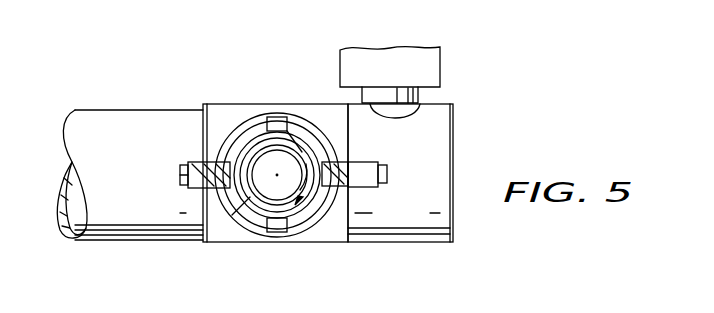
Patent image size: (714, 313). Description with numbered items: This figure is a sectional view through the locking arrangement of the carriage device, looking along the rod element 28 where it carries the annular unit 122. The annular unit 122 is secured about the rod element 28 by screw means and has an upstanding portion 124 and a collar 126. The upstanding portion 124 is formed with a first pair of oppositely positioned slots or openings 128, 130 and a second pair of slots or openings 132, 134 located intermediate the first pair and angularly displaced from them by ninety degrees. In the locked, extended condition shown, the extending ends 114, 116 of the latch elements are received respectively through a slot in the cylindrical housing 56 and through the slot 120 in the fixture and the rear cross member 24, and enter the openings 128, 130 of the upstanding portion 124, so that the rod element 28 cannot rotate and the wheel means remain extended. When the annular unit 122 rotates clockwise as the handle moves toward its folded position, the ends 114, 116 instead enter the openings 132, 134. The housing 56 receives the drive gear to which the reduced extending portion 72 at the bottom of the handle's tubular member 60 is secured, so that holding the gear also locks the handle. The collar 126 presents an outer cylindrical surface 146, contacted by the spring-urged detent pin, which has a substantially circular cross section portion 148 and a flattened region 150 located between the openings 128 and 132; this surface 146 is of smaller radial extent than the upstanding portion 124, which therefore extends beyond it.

The rear cross member 24 is at (75, 110).
The rod element 28 is at (248, 136).
The cylindrical housing 56 is at (437, 155).
The tubular members 60 is at (368, 52).
The extending portion 72 is at (418, 110).
The extending end 114 is at (362, 172).
The extending end 116 is at (182, 168).
The slot 120 is at (183, 181).
The annular unit 122 is at (250, 136).
The upstanding portion 124 is at (313, 149).
The collar 126 is at (253, 197).
The slot or opening 128 is at (315, 202).
The slot or opening 130 is at (198, 180).
The slot or opening 132 is at (278, 118).
The slot or opening 134 is at (278, 203).
The outer cylindrical surface 146 is at (263, 214).
The substantially circular cross section portion 148 is at (250, 157).
The flattened region 150 is at (288, 117).